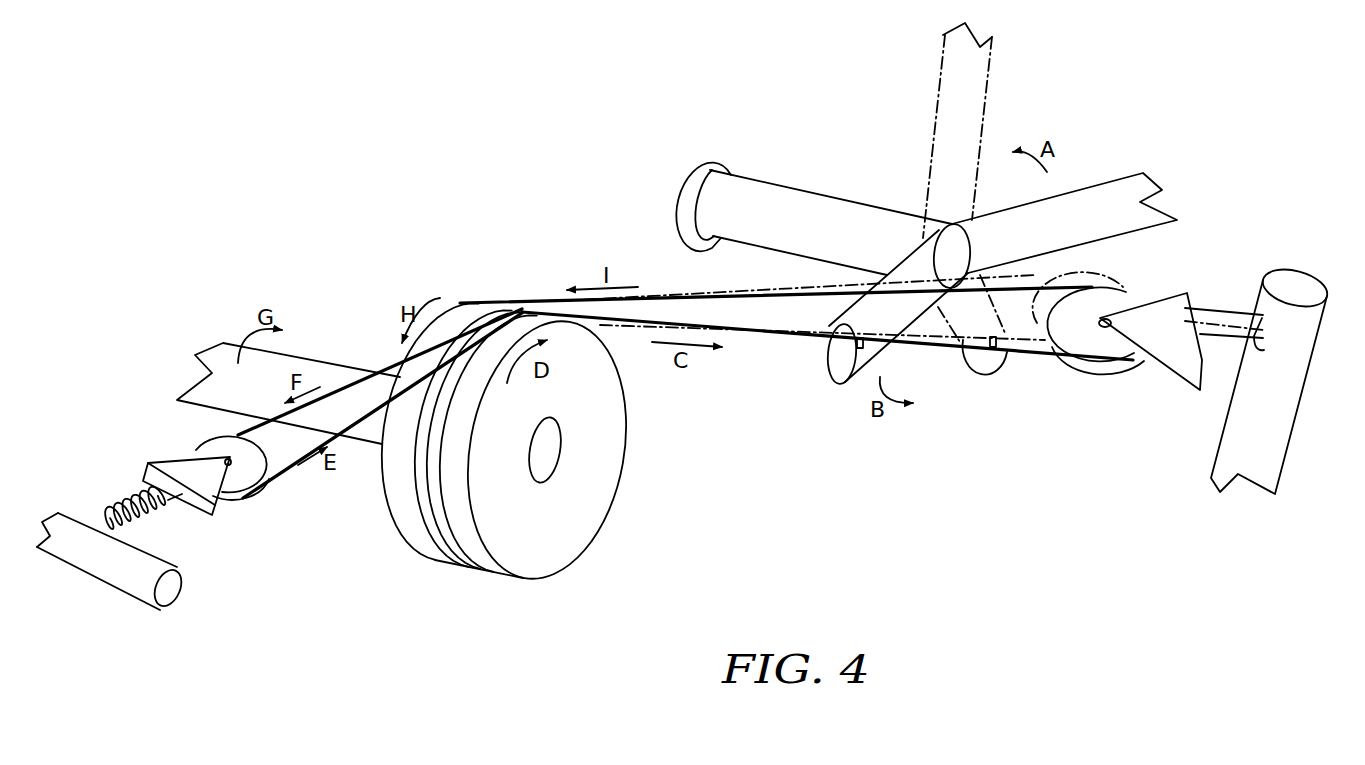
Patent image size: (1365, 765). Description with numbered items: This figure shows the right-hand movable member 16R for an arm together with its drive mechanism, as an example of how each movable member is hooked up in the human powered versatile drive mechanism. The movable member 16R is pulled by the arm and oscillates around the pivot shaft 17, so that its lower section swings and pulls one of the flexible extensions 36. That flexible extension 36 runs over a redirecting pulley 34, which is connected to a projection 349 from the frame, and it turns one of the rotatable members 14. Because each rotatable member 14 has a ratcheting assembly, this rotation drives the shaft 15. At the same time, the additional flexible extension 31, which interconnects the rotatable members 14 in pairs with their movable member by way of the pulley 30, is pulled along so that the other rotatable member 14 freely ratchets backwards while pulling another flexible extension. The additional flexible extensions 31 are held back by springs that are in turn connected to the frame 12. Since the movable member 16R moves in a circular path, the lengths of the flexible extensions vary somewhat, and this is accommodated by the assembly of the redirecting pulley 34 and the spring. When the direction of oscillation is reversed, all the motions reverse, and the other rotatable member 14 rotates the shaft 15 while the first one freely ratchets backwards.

The frame 12 is at (90, 578).
The rotatable member 14 is at (538, 560).
The shaft 15 is at (177, 402).
The movable member 16R is at (1124, 172).
The pivot shaft 17 is at (808, 200).
The pulley 30 is at (247, 481).
The additional flexible extension 31 is at (388, 363).
The redirecting pulley 34 is at (1108, 358).
The flexible extension 36 is at (803, 340).
The projection 349 is at (1280, 433).